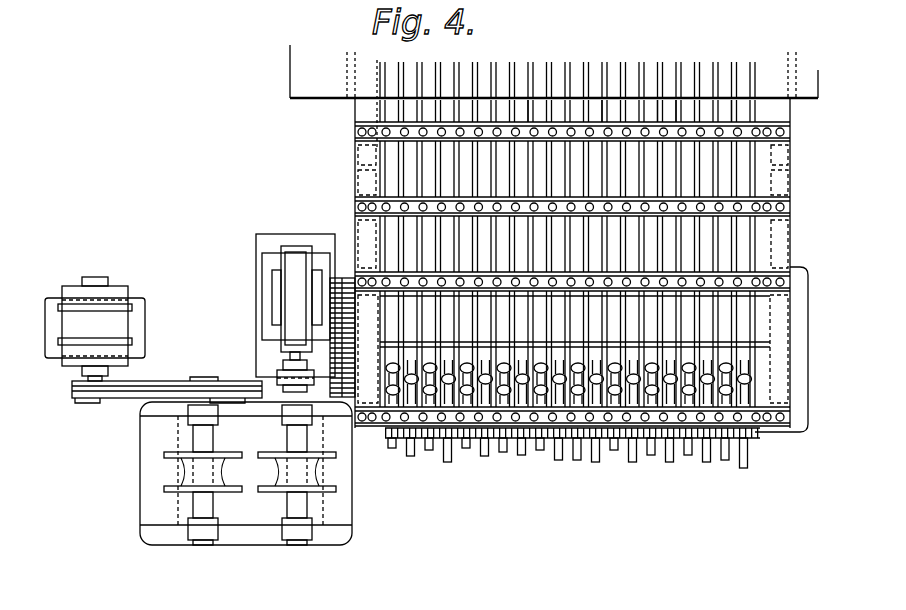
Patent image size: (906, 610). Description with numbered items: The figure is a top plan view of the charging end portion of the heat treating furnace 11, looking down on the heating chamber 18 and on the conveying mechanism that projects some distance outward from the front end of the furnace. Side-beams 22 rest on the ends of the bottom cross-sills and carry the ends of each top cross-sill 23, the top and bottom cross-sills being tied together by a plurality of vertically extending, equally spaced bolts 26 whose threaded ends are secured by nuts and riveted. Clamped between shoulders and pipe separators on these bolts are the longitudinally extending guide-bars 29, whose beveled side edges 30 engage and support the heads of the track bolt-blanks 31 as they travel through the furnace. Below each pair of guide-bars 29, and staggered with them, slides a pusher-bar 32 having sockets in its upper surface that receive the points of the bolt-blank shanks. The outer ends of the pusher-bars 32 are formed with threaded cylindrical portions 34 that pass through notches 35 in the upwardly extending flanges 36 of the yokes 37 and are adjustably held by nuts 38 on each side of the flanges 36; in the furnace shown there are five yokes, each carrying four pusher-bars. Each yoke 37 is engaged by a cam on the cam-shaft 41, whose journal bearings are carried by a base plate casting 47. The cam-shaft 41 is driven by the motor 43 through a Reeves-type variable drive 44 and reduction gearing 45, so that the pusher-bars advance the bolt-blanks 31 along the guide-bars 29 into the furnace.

The heat treating furnace 11 is at (300, 80).
The heating chamber 18 is at (752, 72).
The side-beams 22 is at (362, 180).
The top cross-sill 23 is at (773, 273).
The bolts 26 is at (522, 105).
The guide-bars 29 is at (752, 160).
The beveled side edges 30 is at (663, 108).
The track bolt-blanks 31 is at (330, 380).
The pusher-bar 32 is at (728, 100).
The threaded cylindrical portions 34 is at (450, 440).
The notches 35 is at (695, 450).
The flanges 36 is at (533, 440).
The yokes 37 is at (498, 440).
The nuts 38 is at (628, 442).
The cam-shaft 41 is at (297, 332).
The motor 43 is at (112, 293).
The variable drive 44 is at (175, 476).
The reduction gearing 45 is at (328, 317).
The base plate casting 47 is at (380, 437).